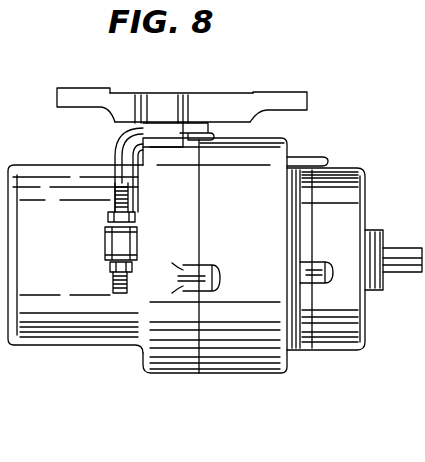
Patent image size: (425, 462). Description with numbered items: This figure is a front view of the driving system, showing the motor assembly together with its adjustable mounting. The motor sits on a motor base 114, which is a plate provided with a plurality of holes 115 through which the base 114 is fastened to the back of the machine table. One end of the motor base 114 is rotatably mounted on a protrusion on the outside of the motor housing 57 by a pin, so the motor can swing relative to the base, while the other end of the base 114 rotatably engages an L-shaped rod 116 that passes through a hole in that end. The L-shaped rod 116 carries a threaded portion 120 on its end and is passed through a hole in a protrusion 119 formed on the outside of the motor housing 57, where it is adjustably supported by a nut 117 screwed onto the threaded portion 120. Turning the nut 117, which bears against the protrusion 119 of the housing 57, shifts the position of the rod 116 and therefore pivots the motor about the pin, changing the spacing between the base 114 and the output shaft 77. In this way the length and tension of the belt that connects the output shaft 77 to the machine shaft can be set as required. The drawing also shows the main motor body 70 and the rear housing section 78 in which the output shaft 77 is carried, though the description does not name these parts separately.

The motor housing 57 is at (31, 340).
The main housing body 70 is at (267, 372).
The output shaft 77 is at (403, 248).
The rear housing 78 is at (340, 345).
The motor base 114 is at (205, 98).
The holes 115 is at (88, 92).
The L-shaped rod 116 is at (118, 150).
The nut 117 is at (108, 215).
The protrusion 119 is at (108, 245).
The threaded portion 120 is at (115, 288).